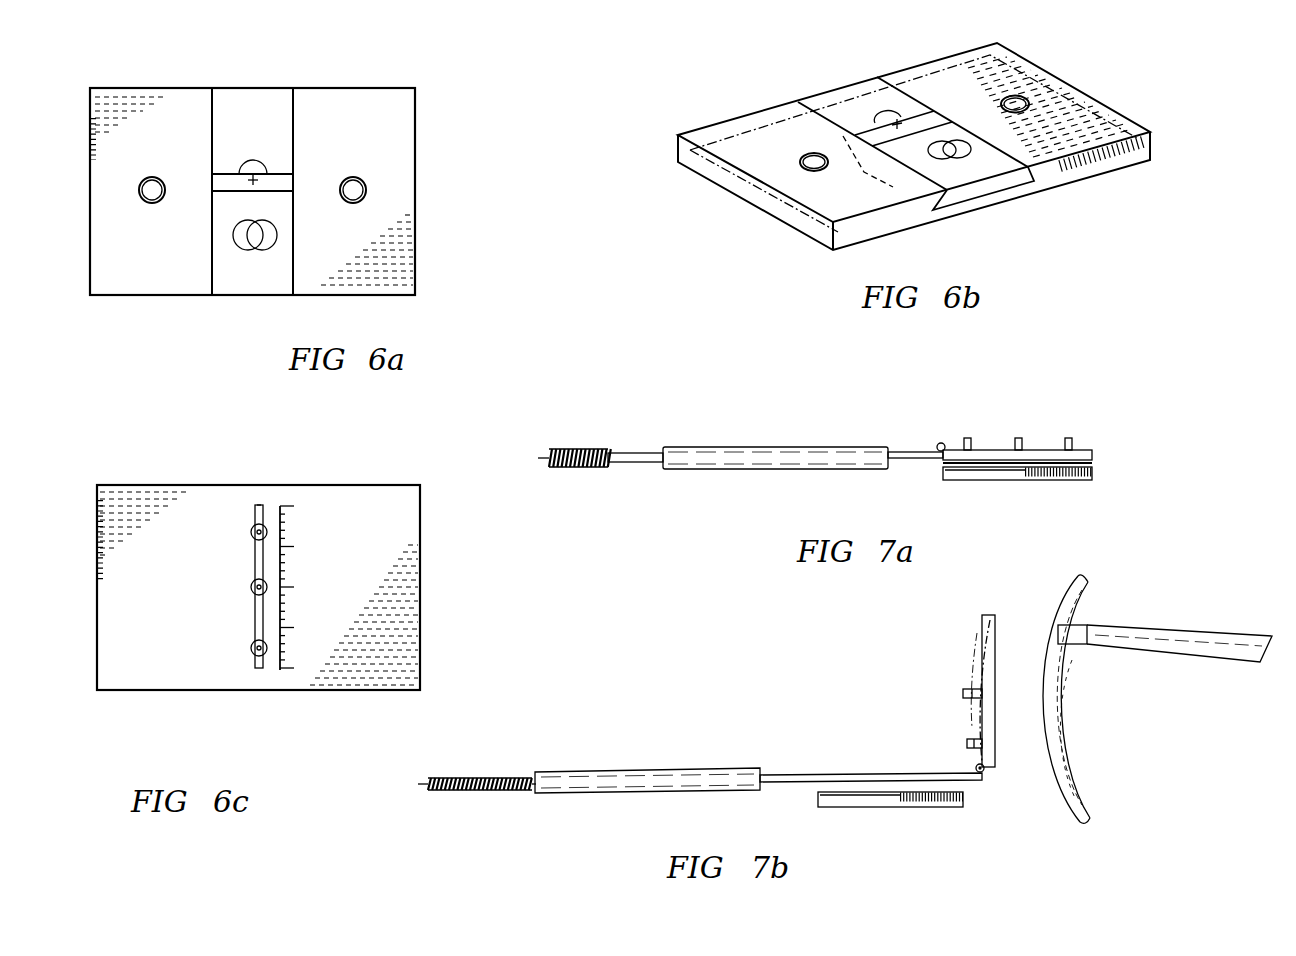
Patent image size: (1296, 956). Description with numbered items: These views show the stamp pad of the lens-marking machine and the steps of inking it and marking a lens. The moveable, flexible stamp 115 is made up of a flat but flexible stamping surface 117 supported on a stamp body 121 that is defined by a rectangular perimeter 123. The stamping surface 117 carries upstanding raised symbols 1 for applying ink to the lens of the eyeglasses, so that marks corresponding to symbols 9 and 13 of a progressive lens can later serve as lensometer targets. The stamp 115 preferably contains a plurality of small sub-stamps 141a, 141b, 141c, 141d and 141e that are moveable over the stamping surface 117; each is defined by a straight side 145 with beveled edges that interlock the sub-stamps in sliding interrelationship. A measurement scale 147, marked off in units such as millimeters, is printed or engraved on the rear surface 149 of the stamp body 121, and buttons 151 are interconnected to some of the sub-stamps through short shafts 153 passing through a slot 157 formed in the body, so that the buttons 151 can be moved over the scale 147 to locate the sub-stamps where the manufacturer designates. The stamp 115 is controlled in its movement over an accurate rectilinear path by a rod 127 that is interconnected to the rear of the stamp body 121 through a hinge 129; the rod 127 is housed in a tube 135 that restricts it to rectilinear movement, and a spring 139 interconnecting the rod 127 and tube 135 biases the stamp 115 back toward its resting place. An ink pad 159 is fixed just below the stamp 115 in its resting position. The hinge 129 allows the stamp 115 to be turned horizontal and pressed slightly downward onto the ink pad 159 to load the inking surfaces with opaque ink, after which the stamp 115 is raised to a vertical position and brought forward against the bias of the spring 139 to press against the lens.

In FIG. 6B, the laser engravings 1 is at (800, 150).
In FIG. 6B, the symbol 9 is at (887, 113).
In FIG. 6B, the symbol 13 is at (950, 147).
In FIG. 6A, the stamp 115 is at (198, 117).
In FIG. 7A, the stamp 115 is at (1093, 452).
In FIG. 7B, the stamp 115 is at (988, 672).
In FIG. 6A, the stamping surface 117 is at (398, 127).
In FIG. 6B, the stamping surface 117 is at (788, 132).
In FIG. 7B, the stamping surface 117 is at (1000, 730).
In FIG. 6B, the stamp body 121 is at (803, 237).
In FIG. 6C, the stamp body 121 is at (117, 642).
In FIG. 6C, the rectangular perimeter 123 is at (220, 482).
In FIG. 7A, the rod 127 is at (907, 448).
In FIG. 7B, the rod 127 is at (852, 775).
In FIG. 7A, the hinge 129 is at (938, 447).
In FIG. 7B, the hinge 129 is at (976, 769).
In FIG. 7A, the tube 135 is at (775, 452).
In FIG. 7B, the tube 135 is at (612, 782).
In FIG. 7A, the spring 139 is at (575, 470).
In FIG. 7B, the spring 139 is at (472, 794).
In FIG. 6A, the sub-stamp 141a is at (118, 252).
In FIG. 6A, the sub-stamp 141b is at (238, 117).
In FIG. 6A, the sub-stamp 141c is at (350, 123).
In FIG. 6A, the sub-stamp 141d is at (223, 208).
In FIG. 6A, the sub-stamp 141e is at (277, 183).
In FIG. 6A, the straight side 145 is at (283, 255).
In FIG. 6B, the straight side 145 is at (1033, 180).
In FIG. 6C, the measurement scale 147 is at (287, 527).
In FIG. 6C, the rear surface 149 is at (147, 675).
In FIG. 6C, the buttons 151 is at (250, 530).
In FIG. 6C, the short shafts 153 is at (267, 527).
In FIG. 6C, the slot 157 is at (253, 622).
In FIG. 7A, the ink pad 159 is at (1015, 473).
In FIG. 7B, the ink pad 159 is at (902, 810).